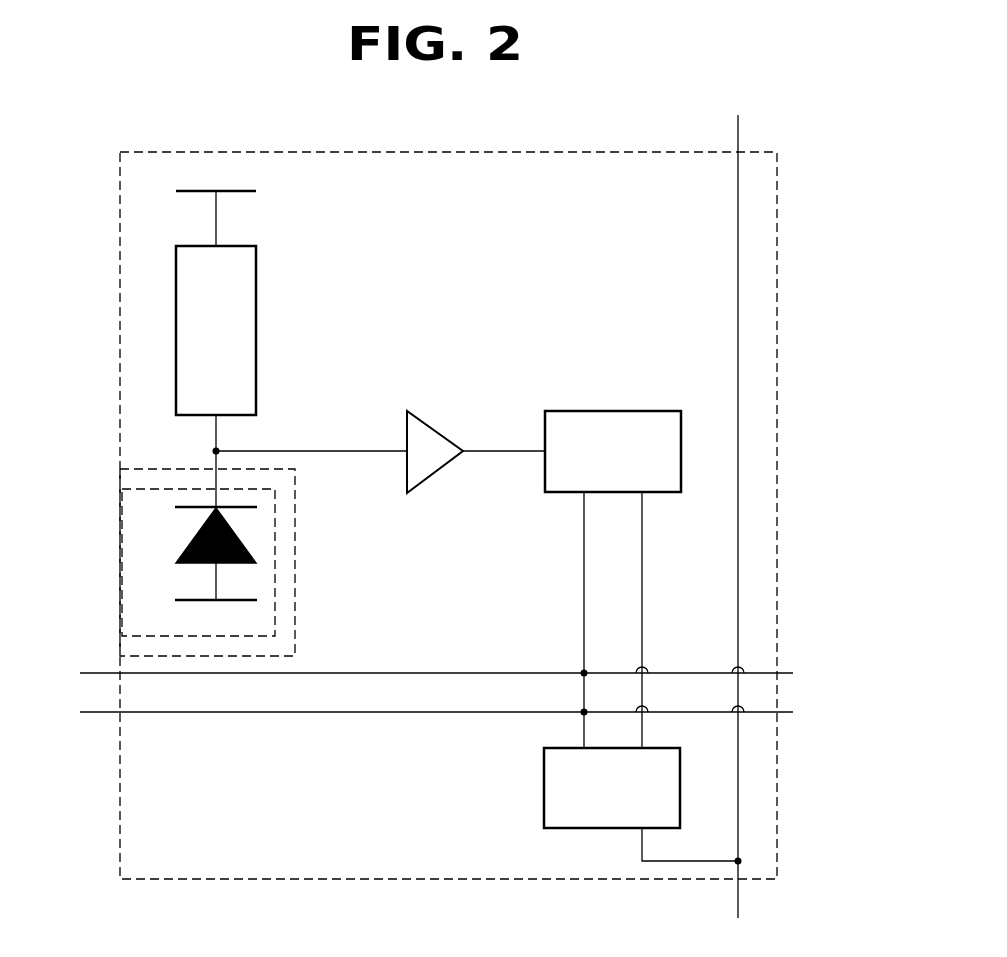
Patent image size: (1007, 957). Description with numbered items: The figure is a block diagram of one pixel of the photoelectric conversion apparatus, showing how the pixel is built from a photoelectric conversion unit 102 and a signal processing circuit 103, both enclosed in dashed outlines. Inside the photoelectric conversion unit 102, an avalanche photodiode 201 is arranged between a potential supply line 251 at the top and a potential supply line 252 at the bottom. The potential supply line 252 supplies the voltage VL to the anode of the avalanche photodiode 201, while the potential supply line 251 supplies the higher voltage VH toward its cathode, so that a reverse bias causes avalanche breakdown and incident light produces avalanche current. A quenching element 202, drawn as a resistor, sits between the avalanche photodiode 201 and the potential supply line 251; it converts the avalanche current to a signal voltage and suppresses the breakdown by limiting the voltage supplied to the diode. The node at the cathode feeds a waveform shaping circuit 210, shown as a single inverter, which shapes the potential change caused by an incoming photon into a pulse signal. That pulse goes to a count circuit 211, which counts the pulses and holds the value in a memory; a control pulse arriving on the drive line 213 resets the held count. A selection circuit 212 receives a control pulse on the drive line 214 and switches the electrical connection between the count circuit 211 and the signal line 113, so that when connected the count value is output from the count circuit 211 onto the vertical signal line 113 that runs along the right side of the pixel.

The photoelectric conversion unit 102 is at (118, 610).
The signal processing circuit 103 is at (118, 805).
The signal line 113 is at (738, 590).
The avalanche photodiode 201 is at (195, 538).
The quenching element 202 is at (195, 330).
The waveform shaping circuit 210 is at (431, 426).
The count circuit 211 is at (638, 411).
The selection circuit 212 is at (544, 787).
The drive line 213 is at (793, 673).
The drive line 214 is at (793, 712).
The potential supply line 251 is at (246, 191).
The potential supply line 252 is at (243, 600).